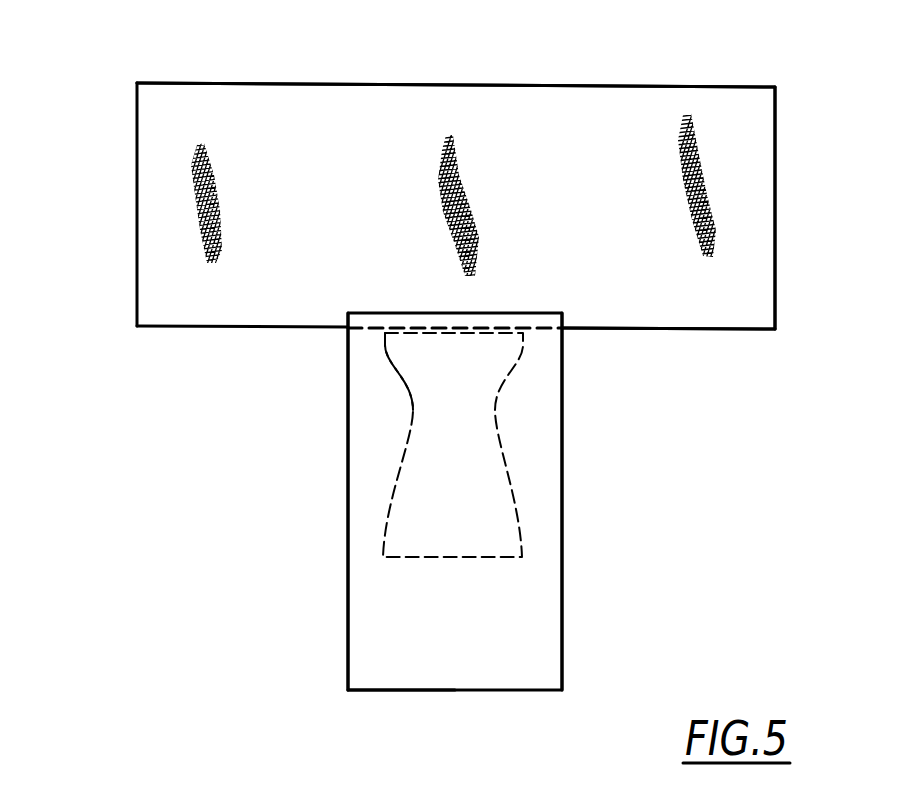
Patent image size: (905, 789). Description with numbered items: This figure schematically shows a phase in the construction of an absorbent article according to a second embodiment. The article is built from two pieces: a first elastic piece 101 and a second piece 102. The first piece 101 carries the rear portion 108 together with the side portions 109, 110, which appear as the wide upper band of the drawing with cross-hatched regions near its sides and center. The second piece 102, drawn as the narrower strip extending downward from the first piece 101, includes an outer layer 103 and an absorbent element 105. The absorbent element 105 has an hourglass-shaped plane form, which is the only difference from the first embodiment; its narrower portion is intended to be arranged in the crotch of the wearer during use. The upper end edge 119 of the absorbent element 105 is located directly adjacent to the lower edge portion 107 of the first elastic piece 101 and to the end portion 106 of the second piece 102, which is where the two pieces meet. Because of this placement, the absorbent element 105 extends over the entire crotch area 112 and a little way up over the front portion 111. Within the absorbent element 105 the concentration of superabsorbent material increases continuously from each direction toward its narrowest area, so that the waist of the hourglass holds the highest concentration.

The first piece 101 is at (680, 80).
The second piece 102 is at (518, 696).
The outer layer 103 is at (527, 638).
The absorbent element 105 is at (468, 512).
The end portion 106 is at (527, 318).
The lower edge portion 107 is at (705, 316).
The rear portion 108 is at (517, 100).
The side portion 109 is at (165, 233).
The side portion 110 is at (755, 228).
The front portion 111 is at (392, 630).
The crotch area 112 is at (370, 458).
The upper end edge 119 is at (412, 335).